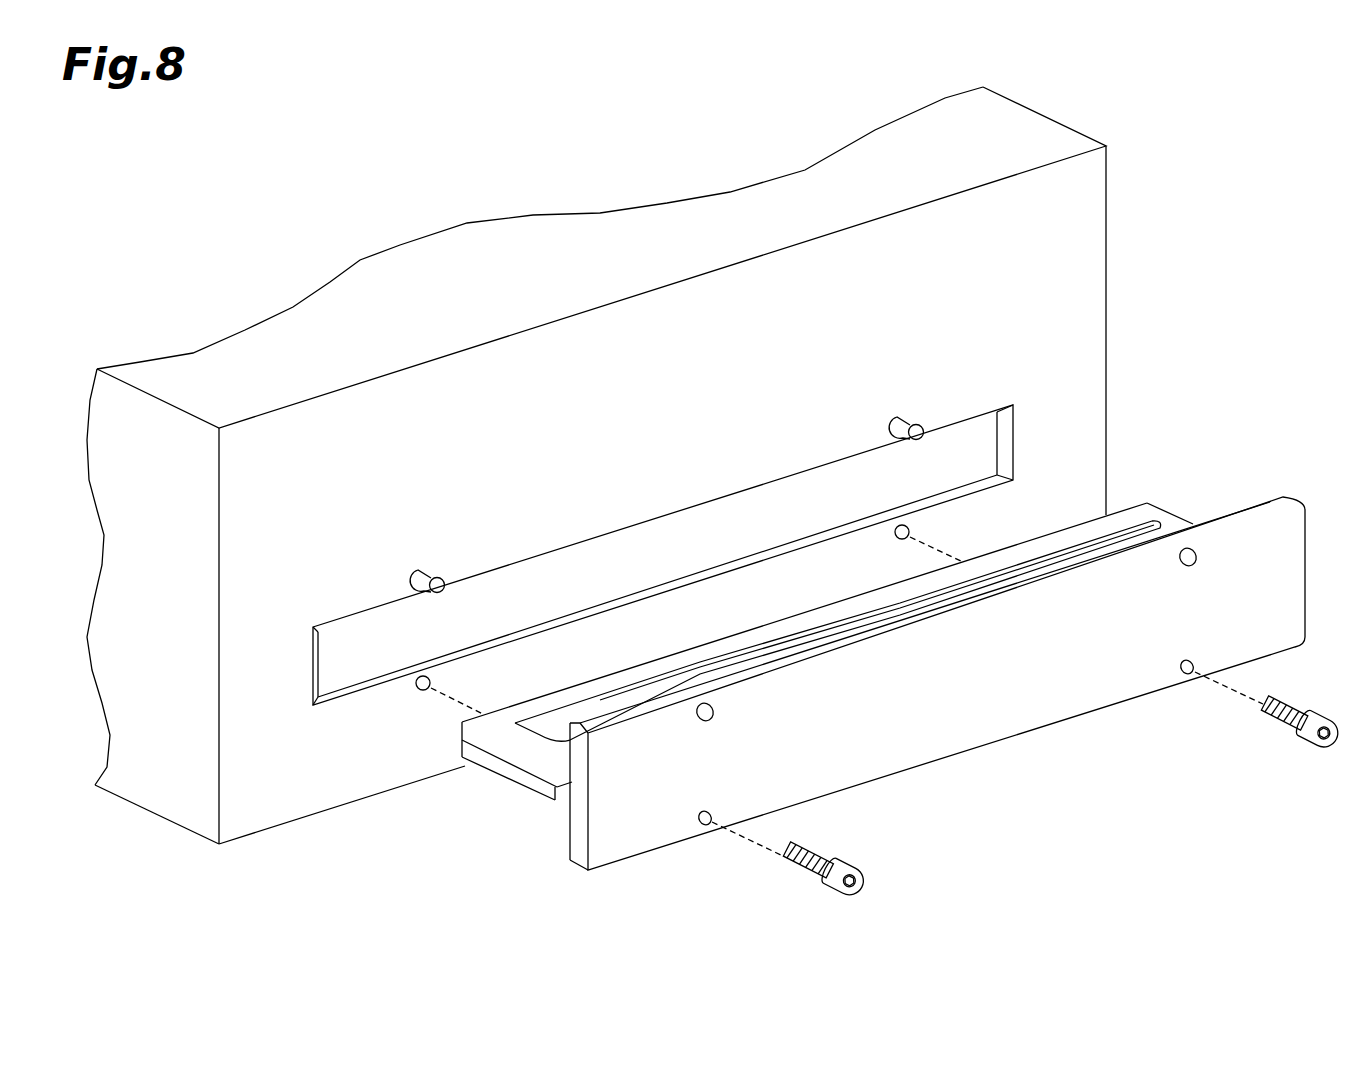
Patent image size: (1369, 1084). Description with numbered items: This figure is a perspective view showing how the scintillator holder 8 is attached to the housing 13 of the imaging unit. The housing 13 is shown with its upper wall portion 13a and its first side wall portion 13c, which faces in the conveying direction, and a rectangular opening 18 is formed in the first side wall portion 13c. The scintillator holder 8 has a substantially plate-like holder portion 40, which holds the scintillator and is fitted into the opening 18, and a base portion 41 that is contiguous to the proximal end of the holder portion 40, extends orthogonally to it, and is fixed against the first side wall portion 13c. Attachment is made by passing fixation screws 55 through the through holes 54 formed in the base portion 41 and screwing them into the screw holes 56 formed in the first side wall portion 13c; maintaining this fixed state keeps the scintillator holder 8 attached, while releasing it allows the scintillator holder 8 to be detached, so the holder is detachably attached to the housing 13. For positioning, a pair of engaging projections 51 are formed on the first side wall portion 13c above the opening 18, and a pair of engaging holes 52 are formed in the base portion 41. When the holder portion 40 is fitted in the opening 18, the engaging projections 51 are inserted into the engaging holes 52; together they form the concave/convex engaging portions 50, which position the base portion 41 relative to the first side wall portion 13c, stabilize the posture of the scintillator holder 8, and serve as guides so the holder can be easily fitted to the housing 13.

The scintillator holder 8 is at (1080, 770).
The housing 13 is at (152, 818).
The upper wall portion 13a is at (822, 162).
The first side wall portion 13c is at (1066, 241).
The opening 18 is at (700, 514).
The holder portion 40 is at (1058, 520).
The base portion 41 is at (957, 770).
The concave/convex engaging portions 50 is at (1243, 323).
The engaging projections 51 is at (916, 420).
The engaging holes 52 is at (1190, 547).
The through holes 54 is at (707, 826).
The fixation screws 55 is at (850, 898).
The screw holes 56 is at (433, 682).